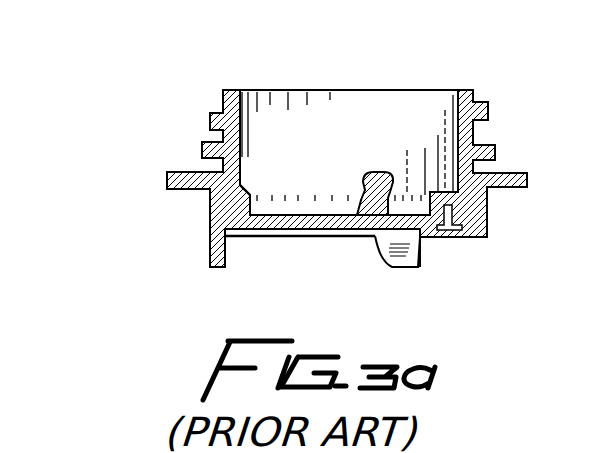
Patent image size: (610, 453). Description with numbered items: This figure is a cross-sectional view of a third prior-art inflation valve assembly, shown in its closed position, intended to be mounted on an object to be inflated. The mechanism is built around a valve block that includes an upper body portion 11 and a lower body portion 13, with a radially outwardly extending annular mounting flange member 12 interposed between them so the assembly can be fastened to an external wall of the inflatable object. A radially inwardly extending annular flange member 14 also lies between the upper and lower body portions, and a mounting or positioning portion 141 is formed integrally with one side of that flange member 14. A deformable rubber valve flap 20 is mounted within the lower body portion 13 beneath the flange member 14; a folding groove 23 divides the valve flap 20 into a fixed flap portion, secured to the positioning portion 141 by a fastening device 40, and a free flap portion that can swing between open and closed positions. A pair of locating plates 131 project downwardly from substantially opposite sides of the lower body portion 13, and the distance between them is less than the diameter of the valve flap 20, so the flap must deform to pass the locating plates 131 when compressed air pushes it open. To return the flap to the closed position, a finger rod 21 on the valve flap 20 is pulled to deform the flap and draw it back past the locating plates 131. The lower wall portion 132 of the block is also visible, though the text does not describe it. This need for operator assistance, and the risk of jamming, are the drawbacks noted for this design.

The upper body portion 11 is at (357, 90).
The annular mounting flange member 12 is at (517, 172).
The lower body portion 13 is at (488, 232).
The annular flange member 14 is at (245, 190).
The finger rod 21 is at (376, 176).
The mounting or positioning portion 141 is at (433, 192).
The valve flap 20 is at (288, 237).
The folding groove 23 is at (410, 236).
The locating plates 131 is at (421, 260).
The fastening device 40 is at (451, 238).
The lower left wall portion 132 is at (210, 256).